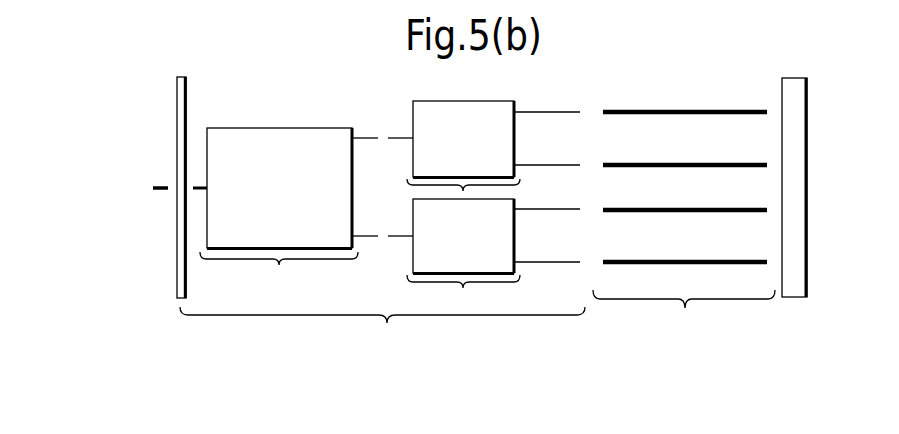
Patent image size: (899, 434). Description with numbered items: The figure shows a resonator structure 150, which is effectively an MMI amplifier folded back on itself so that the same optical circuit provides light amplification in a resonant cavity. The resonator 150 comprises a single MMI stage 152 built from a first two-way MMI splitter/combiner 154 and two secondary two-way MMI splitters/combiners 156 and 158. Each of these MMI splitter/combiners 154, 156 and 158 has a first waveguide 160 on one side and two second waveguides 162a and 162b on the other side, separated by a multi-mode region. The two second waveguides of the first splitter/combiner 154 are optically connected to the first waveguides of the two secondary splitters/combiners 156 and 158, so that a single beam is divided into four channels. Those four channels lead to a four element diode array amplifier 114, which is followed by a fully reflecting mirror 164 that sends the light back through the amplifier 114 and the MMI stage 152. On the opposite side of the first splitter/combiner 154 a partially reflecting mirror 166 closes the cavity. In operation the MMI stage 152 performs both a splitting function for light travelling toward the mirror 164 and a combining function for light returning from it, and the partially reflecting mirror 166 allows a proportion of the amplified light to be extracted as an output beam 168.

The resonator structure 150 is at (757, 348).
The MMI stage 152 is at (382, 332).
The first two-way MMI splitter/combiner 154 is at (275, 211).
The secondary two-way MMI splitter/combiner 156 is at (462, 192).
The secondary two-way MMI splitter/combiner 158 is at (463, 256).
The first waveguide 160 is at (396, 137).
The second waveguide 162a is at (555, 112).
The second waveguide 162b is at (548, 165).
The fully reflecting mirror 164 is at (793, 183).
The partially reflecting mirror 166 is at (178, 245).
The output beam 168 is at (160, 186).
The four element diode array amplifier 114 is at (684, 224).